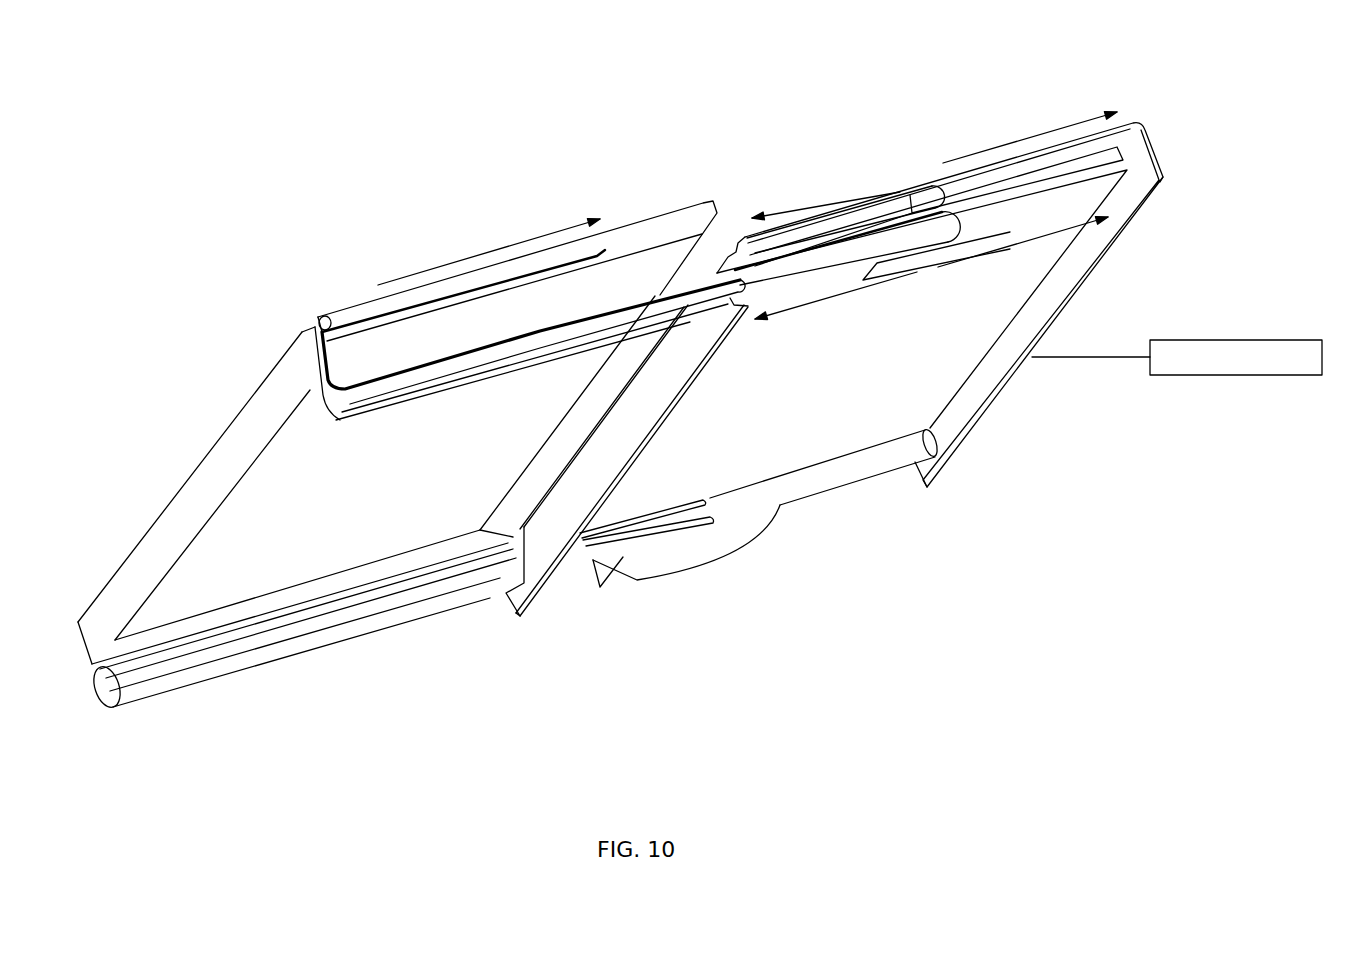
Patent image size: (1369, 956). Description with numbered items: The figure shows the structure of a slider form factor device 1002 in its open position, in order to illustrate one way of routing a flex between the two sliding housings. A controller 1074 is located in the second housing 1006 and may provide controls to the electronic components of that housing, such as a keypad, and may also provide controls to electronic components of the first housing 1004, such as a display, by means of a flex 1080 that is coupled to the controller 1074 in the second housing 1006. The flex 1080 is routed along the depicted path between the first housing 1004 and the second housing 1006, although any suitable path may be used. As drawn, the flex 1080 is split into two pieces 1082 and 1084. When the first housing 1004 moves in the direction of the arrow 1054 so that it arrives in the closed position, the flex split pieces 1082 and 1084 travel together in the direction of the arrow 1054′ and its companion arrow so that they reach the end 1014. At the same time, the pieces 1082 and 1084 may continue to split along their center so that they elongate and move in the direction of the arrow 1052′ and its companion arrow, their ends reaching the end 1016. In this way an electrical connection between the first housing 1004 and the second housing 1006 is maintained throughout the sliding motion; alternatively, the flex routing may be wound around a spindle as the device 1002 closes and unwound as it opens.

The slider form factor device 1002 is at (230, 140).
The first housing 1004 is at (207, 457).
The second housing 1006 is at (1047, 147).
The end 1014 is at (1163, 180).
The end 1016 is at (618, 440).
The arrow 1052′ is at (808, 200).
The arrow 1054 is at (447, 262).
The arrow 1054′ is at (980, 150).
The controller 1074 is at (1288, 340).
The flex 1080 is at (513, 280).
The flex split piece 1082 is at (903, 197).
The flex split piece 1084 is at (905, 262).